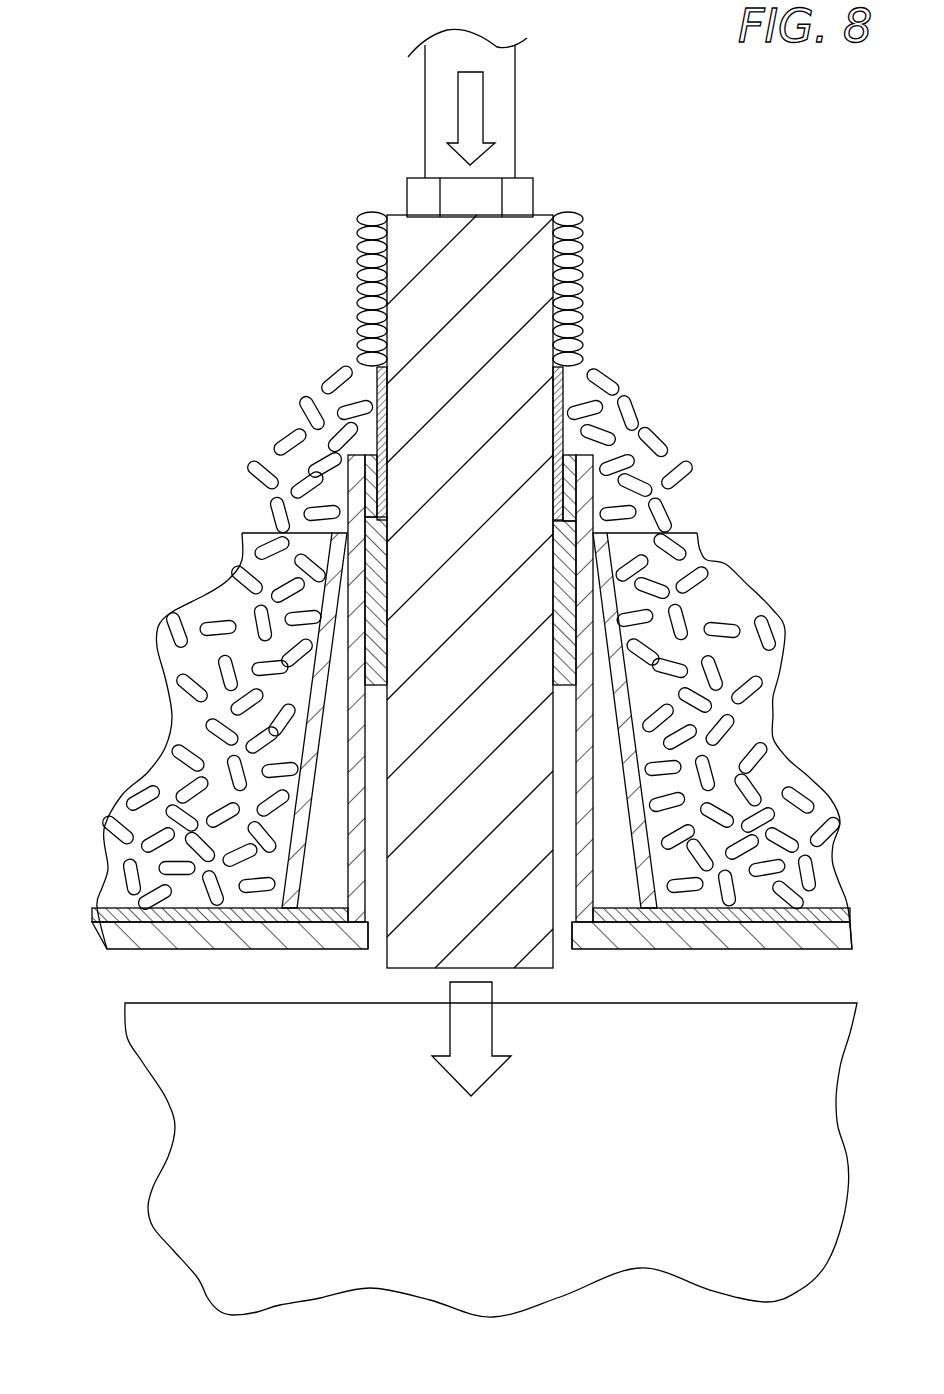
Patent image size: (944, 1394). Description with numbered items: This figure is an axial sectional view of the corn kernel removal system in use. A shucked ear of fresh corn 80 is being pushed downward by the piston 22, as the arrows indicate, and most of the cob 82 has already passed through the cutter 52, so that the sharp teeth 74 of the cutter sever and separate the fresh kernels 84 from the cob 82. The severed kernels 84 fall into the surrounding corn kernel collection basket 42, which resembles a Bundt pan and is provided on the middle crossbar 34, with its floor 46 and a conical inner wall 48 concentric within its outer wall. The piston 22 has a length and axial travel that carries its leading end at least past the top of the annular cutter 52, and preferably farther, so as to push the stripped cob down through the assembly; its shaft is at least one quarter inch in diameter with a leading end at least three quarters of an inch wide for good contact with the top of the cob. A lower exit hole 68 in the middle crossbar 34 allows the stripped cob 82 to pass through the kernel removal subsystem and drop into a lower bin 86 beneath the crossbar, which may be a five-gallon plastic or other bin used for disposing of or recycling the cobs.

The piston 22 is at (533, 197).
The middle crossbar 34 is at (173, 950).
The corn kernel collection basket 42 is at (195, 588).
The floor 46 is at (183, 907).
The conical inner wall 48 is at (312, 690).
The cutter 52 is at (563, 423).
The lower exit hole 68 is at (375, 940).
The sharp teeth 74 is at (380, 370).
The shucked ear of fresh corn 80 is at (360, 250).
The cob 82 is at (520, 940).
The fresh kernels 84 is at (260, 460).
The lower bin 86 is at (334, 1166).